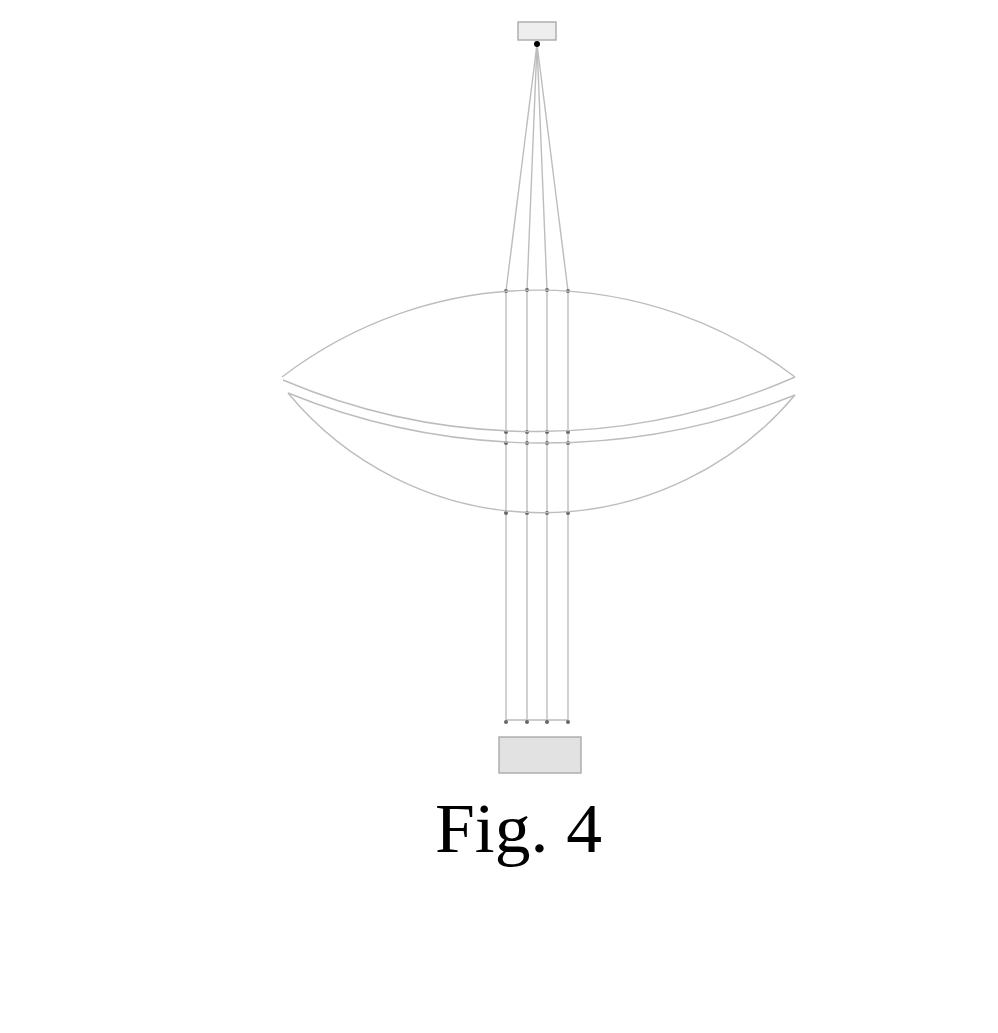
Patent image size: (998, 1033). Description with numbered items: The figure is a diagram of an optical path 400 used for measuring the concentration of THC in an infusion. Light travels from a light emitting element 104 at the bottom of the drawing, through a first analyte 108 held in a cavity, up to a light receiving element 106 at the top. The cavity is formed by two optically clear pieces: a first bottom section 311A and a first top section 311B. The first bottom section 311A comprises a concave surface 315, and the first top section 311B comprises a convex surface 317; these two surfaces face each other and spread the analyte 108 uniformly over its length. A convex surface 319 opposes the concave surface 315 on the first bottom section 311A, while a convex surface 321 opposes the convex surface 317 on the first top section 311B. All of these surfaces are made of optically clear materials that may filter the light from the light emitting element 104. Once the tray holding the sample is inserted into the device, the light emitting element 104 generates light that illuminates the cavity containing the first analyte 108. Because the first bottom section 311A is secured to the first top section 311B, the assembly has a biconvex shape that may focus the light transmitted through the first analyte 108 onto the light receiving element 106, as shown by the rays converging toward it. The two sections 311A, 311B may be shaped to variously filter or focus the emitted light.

The optical path 400 is at (907, 240).
The light receiving element 106 is at (563, 42).
The light emitting element 104 is at (592, 722).
The first analyte 108 is at (290, 390).
The first top section 311B is at (518, 330).
The first bottom section 311A is at (558, 485).
The convex surface 321 is at (403, 297).
The convex surface 317 is at (621, 418).
The concave surface 315 is at (623, 442).
The convex surface 319 is at (600, 508).